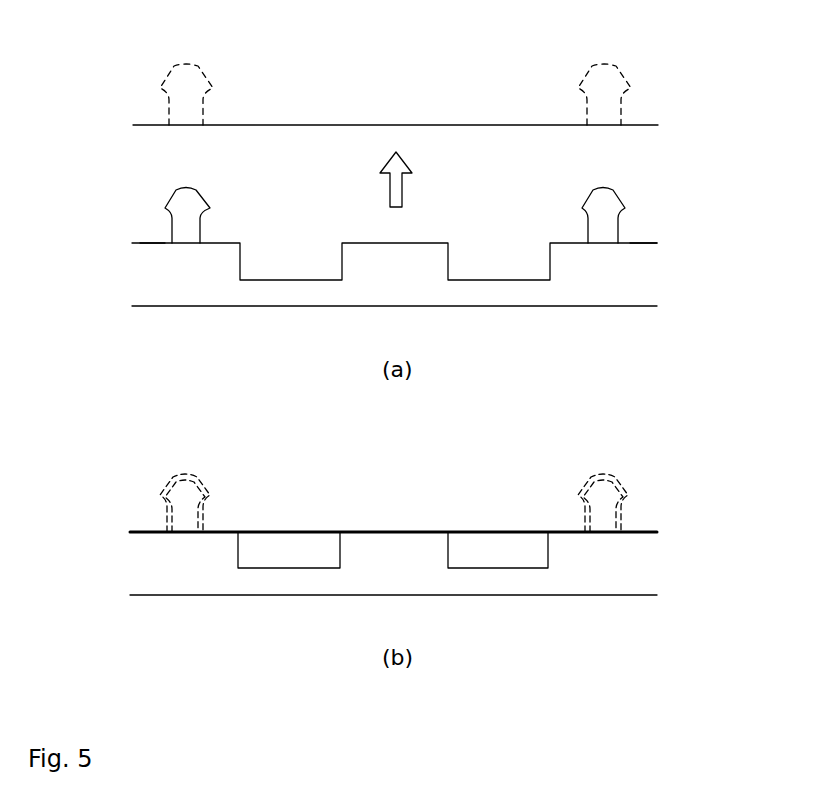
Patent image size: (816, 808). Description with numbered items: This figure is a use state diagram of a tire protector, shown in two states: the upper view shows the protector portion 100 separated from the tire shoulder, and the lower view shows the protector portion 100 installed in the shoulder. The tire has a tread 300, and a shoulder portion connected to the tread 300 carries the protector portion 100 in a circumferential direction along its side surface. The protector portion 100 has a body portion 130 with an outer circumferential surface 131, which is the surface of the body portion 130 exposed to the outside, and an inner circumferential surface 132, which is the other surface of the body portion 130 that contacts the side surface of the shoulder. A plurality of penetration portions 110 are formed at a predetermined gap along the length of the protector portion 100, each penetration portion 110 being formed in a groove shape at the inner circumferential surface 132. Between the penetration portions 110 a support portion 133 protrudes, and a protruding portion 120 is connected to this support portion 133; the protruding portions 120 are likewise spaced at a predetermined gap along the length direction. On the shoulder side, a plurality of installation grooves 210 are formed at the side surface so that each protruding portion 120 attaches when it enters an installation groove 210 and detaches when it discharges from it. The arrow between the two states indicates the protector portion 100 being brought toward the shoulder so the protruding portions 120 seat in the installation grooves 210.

The protector portion 100 is at (202, 319).
The penetration portion 110 is at (298, 260).
The protruding portion 120 is at (178, 212).
The body portion 130 is at (633, 278).
The outer circumferential surface 131 is at (640, 308).
The inner circumferential surface 132 is at (643, 243).
The support portion 133 is at (163, 252).
The installation groove 210 is at (198, 82).
The tread 300 is at (365, 125).